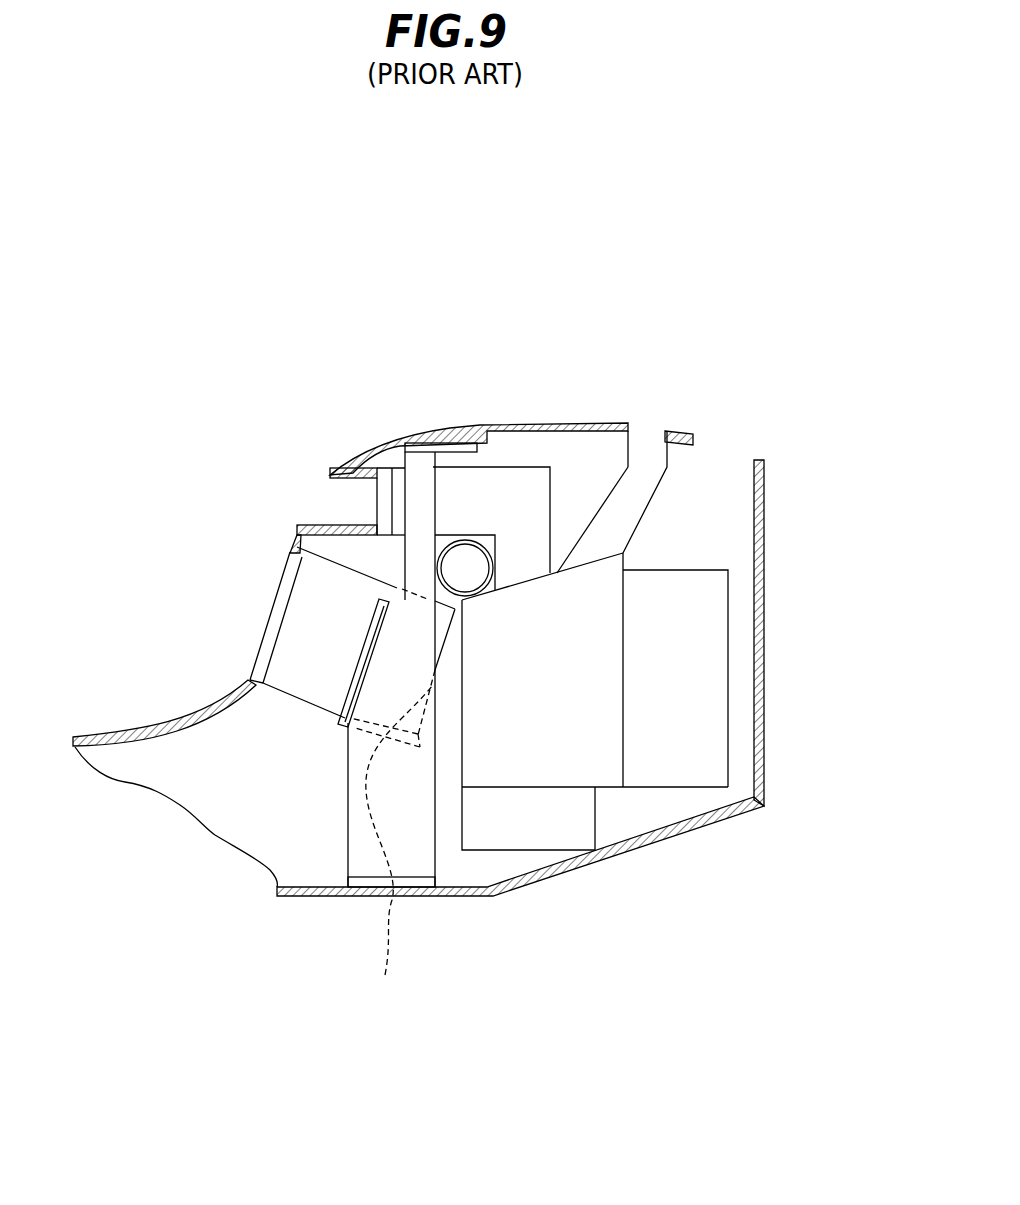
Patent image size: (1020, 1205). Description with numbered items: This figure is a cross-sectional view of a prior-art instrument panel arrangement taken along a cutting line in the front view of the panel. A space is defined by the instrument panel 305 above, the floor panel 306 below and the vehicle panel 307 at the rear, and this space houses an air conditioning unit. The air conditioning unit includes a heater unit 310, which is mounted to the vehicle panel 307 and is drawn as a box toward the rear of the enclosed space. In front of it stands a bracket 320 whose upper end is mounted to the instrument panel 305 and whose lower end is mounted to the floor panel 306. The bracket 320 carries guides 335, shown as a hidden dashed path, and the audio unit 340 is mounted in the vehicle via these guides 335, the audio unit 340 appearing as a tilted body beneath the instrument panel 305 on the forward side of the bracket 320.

The instrument panel 305 is at (571, 423).
The floor panel 306 is at (457, 898).
The vehicle panel 307 is at (764, 607).
The heater unit 310 is at (610, 790).
The bracket 320 is at (348, 836).
The guide 335 is at (388, 851).
The audio unit 340 is at (268, 611).